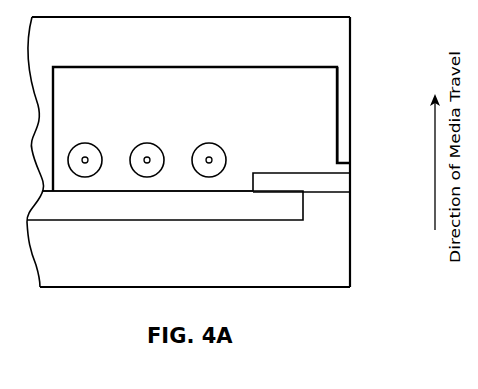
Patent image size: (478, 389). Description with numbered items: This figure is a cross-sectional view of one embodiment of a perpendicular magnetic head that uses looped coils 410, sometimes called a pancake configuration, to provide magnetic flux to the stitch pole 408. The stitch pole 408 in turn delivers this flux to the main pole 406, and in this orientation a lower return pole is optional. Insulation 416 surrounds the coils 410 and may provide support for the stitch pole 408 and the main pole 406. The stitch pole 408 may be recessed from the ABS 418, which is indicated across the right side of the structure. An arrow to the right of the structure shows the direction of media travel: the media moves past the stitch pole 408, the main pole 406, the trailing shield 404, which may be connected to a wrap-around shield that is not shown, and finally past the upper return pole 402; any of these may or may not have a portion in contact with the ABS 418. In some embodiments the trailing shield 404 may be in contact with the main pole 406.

The upper return pole 402 is at (267, 50).
The trailing shield 404 is at (352, 97).
The main pole 406 is at (352, 175).
The stitch pole 408 is at (218, 212).
The looped coils 410 is at (83, 144).
The insulation 416 is at (303, 135).
The ABS 418 is at (351, 34).